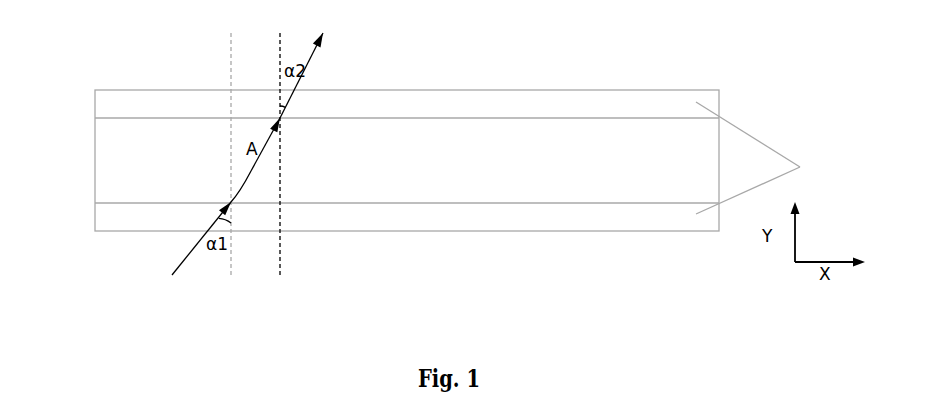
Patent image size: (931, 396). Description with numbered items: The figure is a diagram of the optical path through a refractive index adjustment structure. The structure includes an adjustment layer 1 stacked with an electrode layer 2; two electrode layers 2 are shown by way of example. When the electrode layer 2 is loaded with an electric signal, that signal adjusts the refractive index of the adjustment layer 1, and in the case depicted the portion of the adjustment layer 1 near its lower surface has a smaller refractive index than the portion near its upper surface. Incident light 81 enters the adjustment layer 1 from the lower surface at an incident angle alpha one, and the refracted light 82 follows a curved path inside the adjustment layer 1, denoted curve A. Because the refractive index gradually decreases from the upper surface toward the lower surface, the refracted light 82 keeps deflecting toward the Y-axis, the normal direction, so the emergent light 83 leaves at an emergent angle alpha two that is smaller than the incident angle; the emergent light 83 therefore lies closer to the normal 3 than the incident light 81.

The adjustment layer 1 is at (110, 167).
The electrode layer 2 is at (759, 158).
The normal 3 is at (280, 75).
The incident light 81 is at (199, 241).
The refracted light 82 is at (249, 173).
The emergent light 83 is at (289, 96).